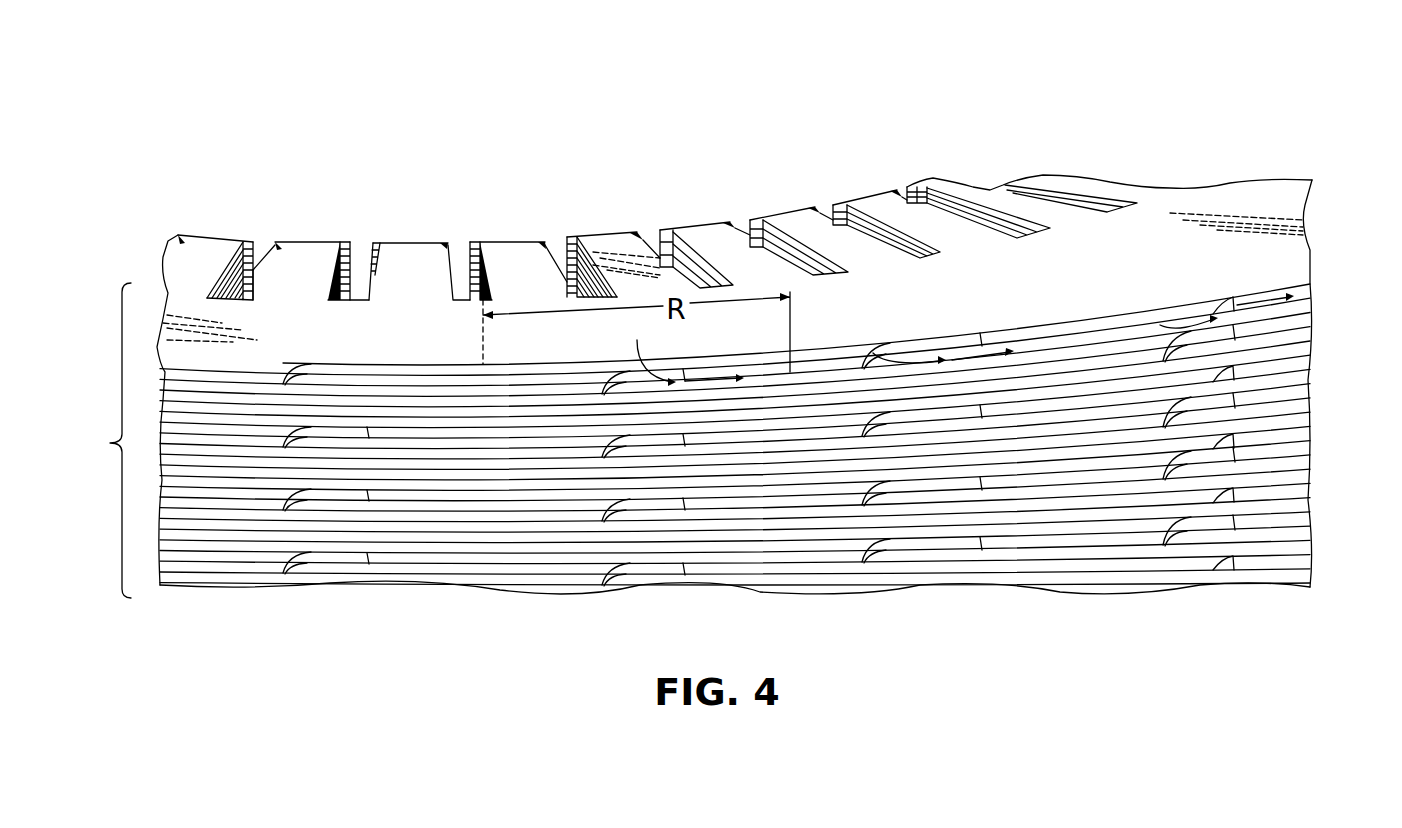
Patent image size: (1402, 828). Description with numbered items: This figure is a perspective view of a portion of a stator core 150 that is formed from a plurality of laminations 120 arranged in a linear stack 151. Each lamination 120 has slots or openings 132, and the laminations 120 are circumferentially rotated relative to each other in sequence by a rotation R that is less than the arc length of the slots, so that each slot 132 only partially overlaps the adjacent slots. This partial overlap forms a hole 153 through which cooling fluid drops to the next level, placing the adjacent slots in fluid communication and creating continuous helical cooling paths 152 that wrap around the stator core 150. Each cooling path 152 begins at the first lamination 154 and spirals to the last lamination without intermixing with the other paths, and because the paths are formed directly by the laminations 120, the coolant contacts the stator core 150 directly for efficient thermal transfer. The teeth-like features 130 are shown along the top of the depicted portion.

The laminations 120 is at (1227, 260).
The teeth 130 is at (460, 253).
The slots 132 is at (420, 367).
The stator core 150 is at (1184, 104).
The linear stack 151 is at (689, 440).
The helical cooling paths 152 is at (1200, 510).
The hole 153 is at (674, 355).
The first lamination 154 is at (1265, 193).